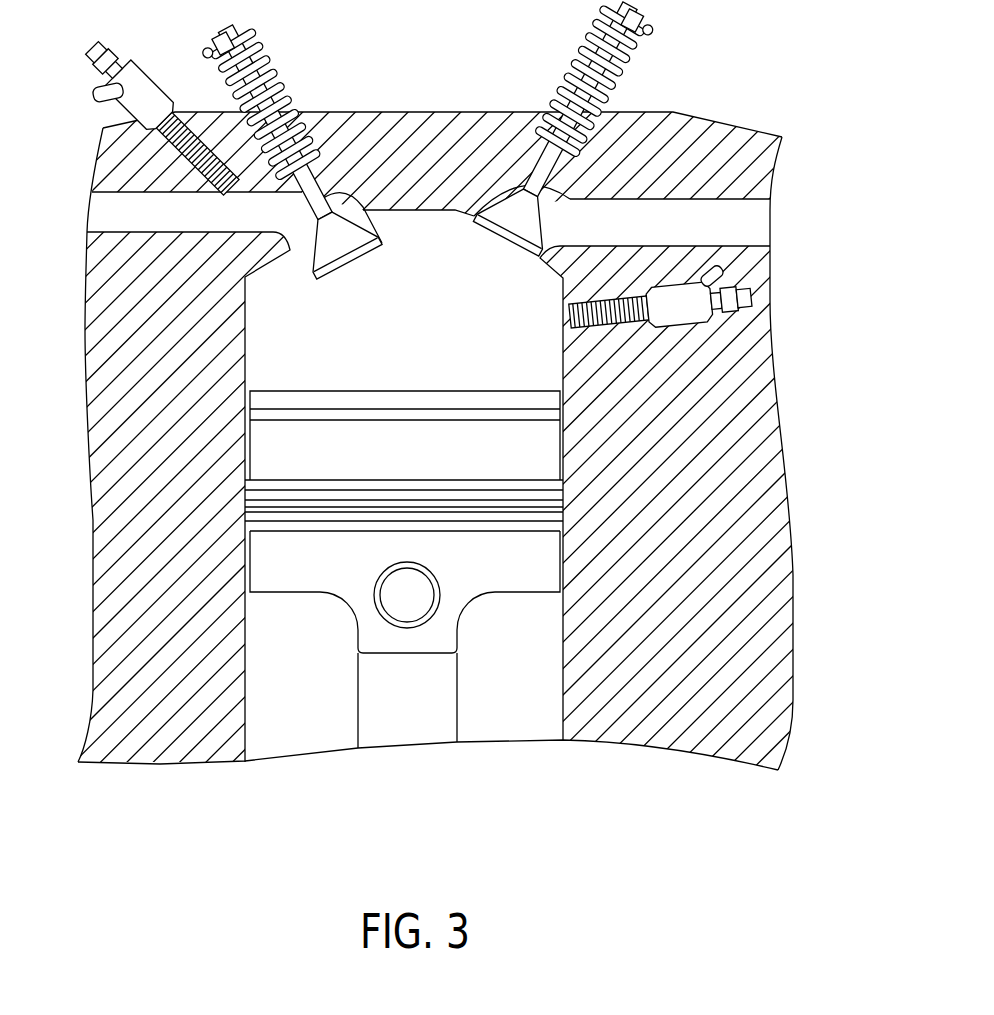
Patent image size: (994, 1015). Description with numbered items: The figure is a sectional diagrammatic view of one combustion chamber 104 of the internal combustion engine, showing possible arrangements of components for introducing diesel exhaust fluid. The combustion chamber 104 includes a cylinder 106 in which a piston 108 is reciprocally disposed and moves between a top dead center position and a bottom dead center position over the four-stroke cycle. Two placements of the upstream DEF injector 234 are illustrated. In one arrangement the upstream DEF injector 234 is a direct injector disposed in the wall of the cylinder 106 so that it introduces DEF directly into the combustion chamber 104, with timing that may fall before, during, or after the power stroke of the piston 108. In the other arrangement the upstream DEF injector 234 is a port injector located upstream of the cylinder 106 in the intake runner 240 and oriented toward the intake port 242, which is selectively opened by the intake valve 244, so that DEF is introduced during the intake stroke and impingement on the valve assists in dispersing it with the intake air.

The combustion chamber 104 is at (438, 205).
The cylinder 106 is at (553, 358).
The piston 108 is at (273, 443).
The upstream DEF injector 234 is at (153, 72).
The intake runner 240 is at (112, 199).
The intake port 242 is at (289, 249).
The intake valve 244 is at (428, 233).